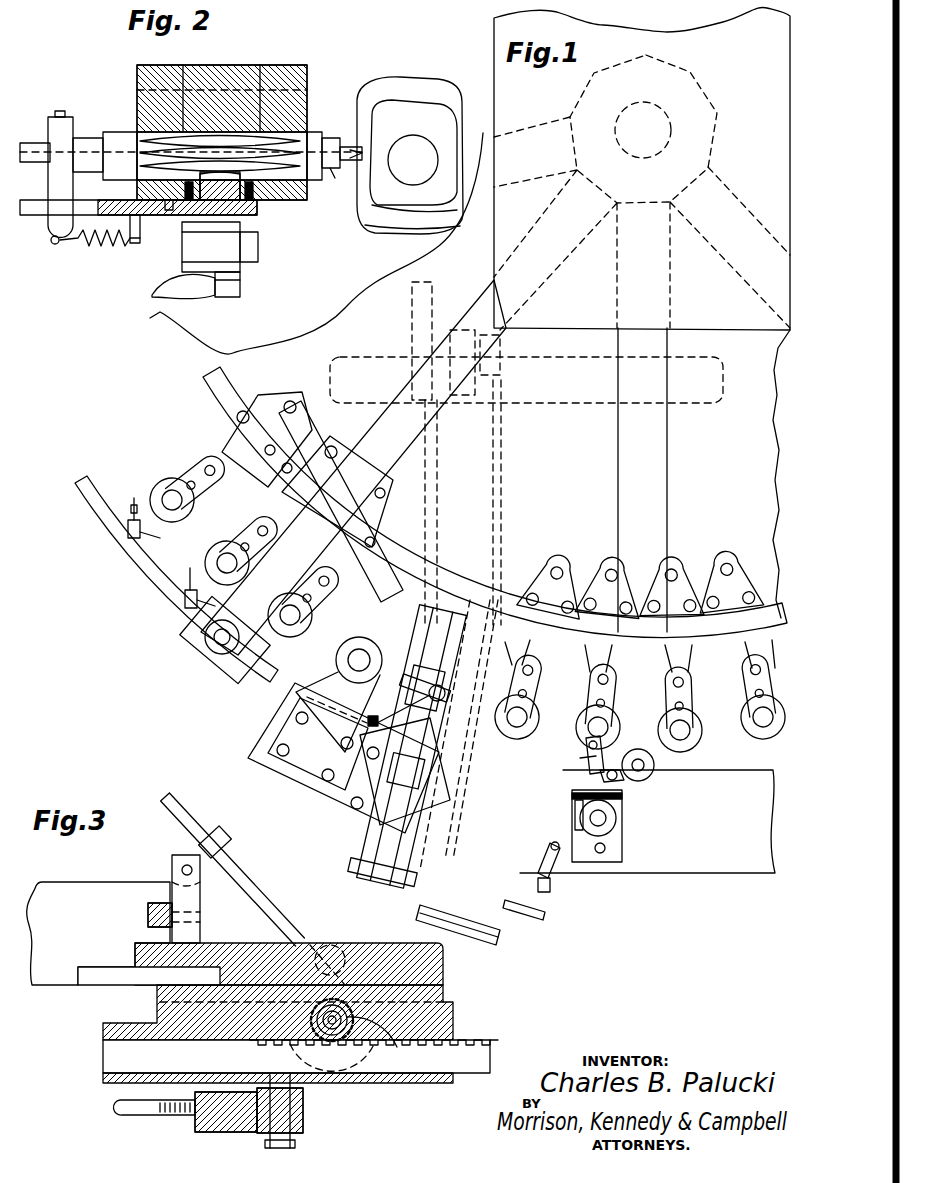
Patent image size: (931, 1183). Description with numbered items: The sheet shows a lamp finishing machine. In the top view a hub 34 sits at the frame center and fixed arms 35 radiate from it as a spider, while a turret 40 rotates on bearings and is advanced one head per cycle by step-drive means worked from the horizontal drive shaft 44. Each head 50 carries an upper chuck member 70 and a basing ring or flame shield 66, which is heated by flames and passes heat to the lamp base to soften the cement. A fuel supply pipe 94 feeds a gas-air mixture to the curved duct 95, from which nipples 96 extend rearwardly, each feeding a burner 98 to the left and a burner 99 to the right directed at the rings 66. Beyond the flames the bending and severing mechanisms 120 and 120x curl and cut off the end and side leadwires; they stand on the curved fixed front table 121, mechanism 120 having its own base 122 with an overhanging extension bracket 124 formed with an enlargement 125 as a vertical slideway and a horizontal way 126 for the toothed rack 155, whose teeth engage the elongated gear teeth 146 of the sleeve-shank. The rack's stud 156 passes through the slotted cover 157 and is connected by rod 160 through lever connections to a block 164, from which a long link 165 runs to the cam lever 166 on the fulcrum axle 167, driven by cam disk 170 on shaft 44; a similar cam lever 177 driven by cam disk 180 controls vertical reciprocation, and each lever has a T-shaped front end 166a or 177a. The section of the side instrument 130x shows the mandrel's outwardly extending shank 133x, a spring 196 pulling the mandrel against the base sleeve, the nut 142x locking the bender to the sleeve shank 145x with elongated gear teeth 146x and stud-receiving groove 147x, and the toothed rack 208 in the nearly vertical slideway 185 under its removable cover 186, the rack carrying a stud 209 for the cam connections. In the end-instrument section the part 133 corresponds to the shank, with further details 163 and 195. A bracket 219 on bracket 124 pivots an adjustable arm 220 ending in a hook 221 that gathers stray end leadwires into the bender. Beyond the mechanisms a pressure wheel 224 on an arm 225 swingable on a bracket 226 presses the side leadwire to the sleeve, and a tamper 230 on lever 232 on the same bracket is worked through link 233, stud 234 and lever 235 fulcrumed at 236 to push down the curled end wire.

In FIG. 1, the hub 34 is at (712, 100).
In FIG. 1, the fixed arms 35 is at (668, 426).
In FIG. 1, the turret 40 is at (208, 386).
In FIG. 1, the horizontal drive shaft 44 is at (380, 360).
In FIG. 1, the head 50 is at (186, 480).
In FIG. 2, the basing ring 66 is at (410, 155).
In FIG. 1, the basing ring 66 is at (289, 628).
In FIG. 2, the upper chuck member 70 is at (418, 152).
In FIG. 1, the fuel supply pipe 94 is at (112, 548).
In FIG. 1, the curved gas-air duct 95 is at (78, 510).
In FIG. 1, the nipples 96 is at (135, 558).
In FIG. 1, the burner 98 is at (132, 500).
In FIG. 1, the burner 99 is at (177, 570).
In FIG. 1, the end leadwire bending and severing mechanism 120 is at (330, 862).
In FIG. 1, the side leadwire bending and severing mechanism 120x is at (446, 905).
In FIG. 1, the curved fixed front table 121 is at (275, 728).
In FIG. 2, the base 122 is at (212, 70).
In FIG. 1, the base 122 is at (352, 812).
In FIG. 3, the extension bracket 124 is at (444, 960).
In FIG. 3, the enlargement 125 is at (388, 1036).
In FIG. 3, the horizontal way 126 is at (112, 1025).
In FIG. 2, the side bending and severing instrument 130x is at (357, 116).
In FIG. 3, the pinion 133 is at (340, 1036).
In FIG. 2, the outwardly extending shank 133x is at (26, 143).
In FIG. 2, the nut 142x is at (349, 163).
In FIG. 2, the sleeve shank 145x is at (115, 132).
In FIG. 3, the elongated gear teeth 146 is at (256, 1040).
In FIG. 2, the elongated gear teeth 146x is at (160, 133).
In FIG. 2, the stud receiving groove 147x is at (93, 136).
In FIG. 3, the toothed rack 155 is at (485, 1040).
In FIG. 3, the stud 156 is at (305, 1115).
In FIG. 3, the slotted cover 157 is at (103, 1078).
In FIG. 3, the rod 160 is at (120, 1110).
In FIG. 2, the lever 163 is at (160, 294).
In FIG. 2, the block 164 is at (240, 280).
In FIG. 2, the long link 165 is at (258, 256).
In FIG. 1, the cam lever 166 is at (490, 478).
In FIG. 1, the T-shape front end 166a is at (470, 775).
In FIG. 1, the fulcrum axle 167 is at (466, 598).
In FIG. 1, the cam disk 170 is at (480, 306).
In FIG. 1, the cam lever 177 is at (437, 486).
In FIG. 1, the T-shape front end 177a is at (433, 868).
In FIG. 1, the cam disk 180 is at (414, 306).
In FIG. 2, the rack slideway 185 is at (312, 185).
In FIG. 2, the removable cover 186 is at (258, 210).
In FIG. 2, the bracket 195 is at (52, 243).
In FIG. 2, the spring 196 is at (95, 248).
In FIG. 2, the toothed rack 208 is at (211, 222).
In FIG. 2, the stud 209 is at (207, 218).
In FIG. 3, the bracket 219 is at (172, 862).
In FIG. 1, the adjustable arm 220 is at (409, 700).
In FIG. 3, the adjustable arm 220 is at (255, 904).
In FIG. 3, the hook 221 is at (340, 940).
In FIG. 1, the pressure wheel 224 is at (655, 765).
In FIG. 1, the arm 225 is at (616, 756).
In FIG. 1, the bracket 226 is at (622, 838).
In FIG. 1, the tamper 230 is at (585, 740).
In FIG. 1, the lever 232 is at (580, 758).
In FIG. 1, the link 233 is at (562, 874).
In FIG. 1, the stud 234 is at (540, 915).
In FIG. 1, the lever 235 is at (550, 890).
In FIG. 1, the fulcrum 236 is at (575, 806).